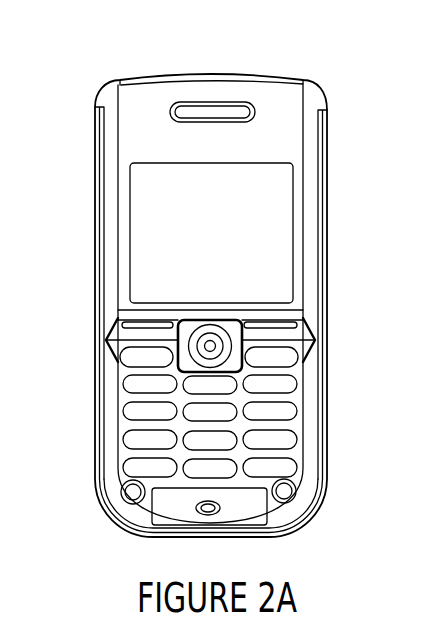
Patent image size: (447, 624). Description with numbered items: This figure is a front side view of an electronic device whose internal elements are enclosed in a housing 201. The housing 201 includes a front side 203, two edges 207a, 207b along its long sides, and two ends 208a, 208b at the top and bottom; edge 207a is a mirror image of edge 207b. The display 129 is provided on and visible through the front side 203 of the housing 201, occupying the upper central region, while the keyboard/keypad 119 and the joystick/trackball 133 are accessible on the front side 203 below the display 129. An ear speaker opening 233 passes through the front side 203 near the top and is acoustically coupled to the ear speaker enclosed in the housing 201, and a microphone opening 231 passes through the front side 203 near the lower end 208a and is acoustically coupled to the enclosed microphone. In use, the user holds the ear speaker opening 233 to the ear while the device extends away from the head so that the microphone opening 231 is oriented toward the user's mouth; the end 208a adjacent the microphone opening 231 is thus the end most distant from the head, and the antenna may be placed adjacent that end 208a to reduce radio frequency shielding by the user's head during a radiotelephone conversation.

The housing 201 is at (108, 59).
The front side 203 is at (140, 130).
The edge 207a is at (95, 255).
The edge 207b is at (326, 288).
The end 208a is at (214, 537).
The end 208b is at (236, 74).
The display 129 is at (281, 222).
The joystick/trackball 133 is at (209, 343).
The keyboard/keypad 119 is at (300, 363).
The ear speaker opening 233 is at (202, 101).
The microphone opening 231 is at (273, 511).